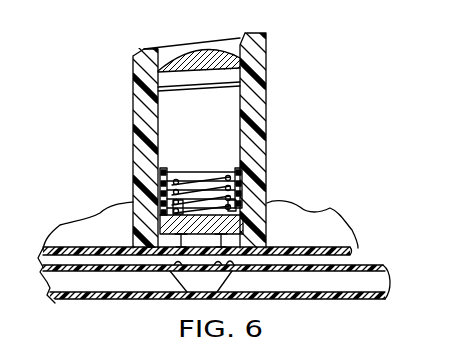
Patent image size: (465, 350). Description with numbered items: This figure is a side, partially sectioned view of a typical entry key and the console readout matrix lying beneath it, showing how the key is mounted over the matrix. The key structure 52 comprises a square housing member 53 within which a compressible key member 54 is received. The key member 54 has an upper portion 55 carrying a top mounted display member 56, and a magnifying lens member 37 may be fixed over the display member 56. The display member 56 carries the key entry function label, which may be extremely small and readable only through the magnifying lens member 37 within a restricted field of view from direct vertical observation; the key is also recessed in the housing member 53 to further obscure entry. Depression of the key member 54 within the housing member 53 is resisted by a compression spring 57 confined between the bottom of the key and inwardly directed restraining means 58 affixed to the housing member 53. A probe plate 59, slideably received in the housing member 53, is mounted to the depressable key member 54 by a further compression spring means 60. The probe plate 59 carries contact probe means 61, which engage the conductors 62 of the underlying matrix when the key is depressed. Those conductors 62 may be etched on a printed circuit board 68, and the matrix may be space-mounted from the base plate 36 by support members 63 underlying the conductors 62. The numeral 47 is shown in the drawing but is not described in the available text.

The base plate 36 is at (373, 298).
The magnifying lens member 37 is at (200, 58).
The mounting plate 47 is at (327, 248).
The key structure 52 is at (225, 38).
The housing member 53 is at (263, 88).
The compressible key member 54 is at (214, 133).
The upper portion 55 is at (170, 113).
The display member 56 is at (180, 70).
The compression spring 57 is at (240, 190).
The restraining means 58 is at (233, 210).
The probe plate 59 is at (162, 235).
The compression spring means 60 is at (196, 212).
The contact probe means 61 is at (163, 243).
The conductors 62 is at (226, 262).
The support members 63 is at (185, 278).
The printed circuit board 68 is at (352, 262).